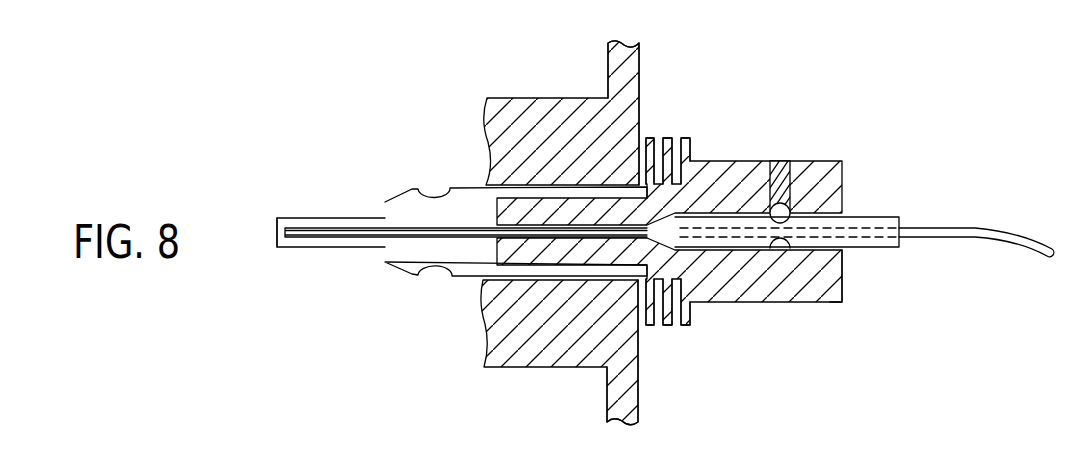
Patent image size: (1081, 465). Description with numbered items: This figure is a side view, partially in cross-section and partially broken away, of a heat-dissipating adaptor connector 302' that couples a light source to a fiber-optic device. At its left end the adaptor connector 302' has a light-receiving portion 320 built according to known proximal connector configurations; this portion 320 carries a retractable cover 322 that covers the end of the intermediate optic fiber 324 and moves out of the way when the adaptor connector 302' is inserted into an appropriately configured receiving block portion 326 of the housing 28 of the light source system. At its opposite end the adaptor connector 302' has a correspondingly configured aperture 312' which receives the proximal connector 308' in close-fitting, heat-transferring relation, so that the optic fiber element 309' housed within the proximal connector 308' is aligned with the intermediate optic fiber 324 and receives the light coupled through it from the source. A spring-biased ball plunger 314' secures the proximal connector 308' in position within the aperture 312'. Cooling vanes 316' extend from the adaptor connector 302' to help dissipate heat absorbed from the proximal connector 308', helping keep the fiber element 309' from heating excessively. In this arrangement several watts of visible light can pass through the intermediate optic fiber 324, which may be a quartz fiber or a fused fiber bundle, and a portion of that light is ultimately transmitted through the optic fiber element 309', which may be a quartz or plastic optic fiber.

The housing 28 is at (628, 68).
The adaptor connector 302' is at (669, 193).
The proximal connector 308' is at (799, 200).
The optic fiber element 309' is at (980, 210).
The aperture 312' is at (875, 276).
The spring-biased ball plunger 314' is at (820, 186).
The cooling vanes 316' is at (688, 270).
The light-receiving portion 320 is at (305, 293).
The retractable cover 322 is at (282, 222).
The intermediate optic fiber 324 is at (428, 237).
The receiving block portion 326 is at (515, 128).